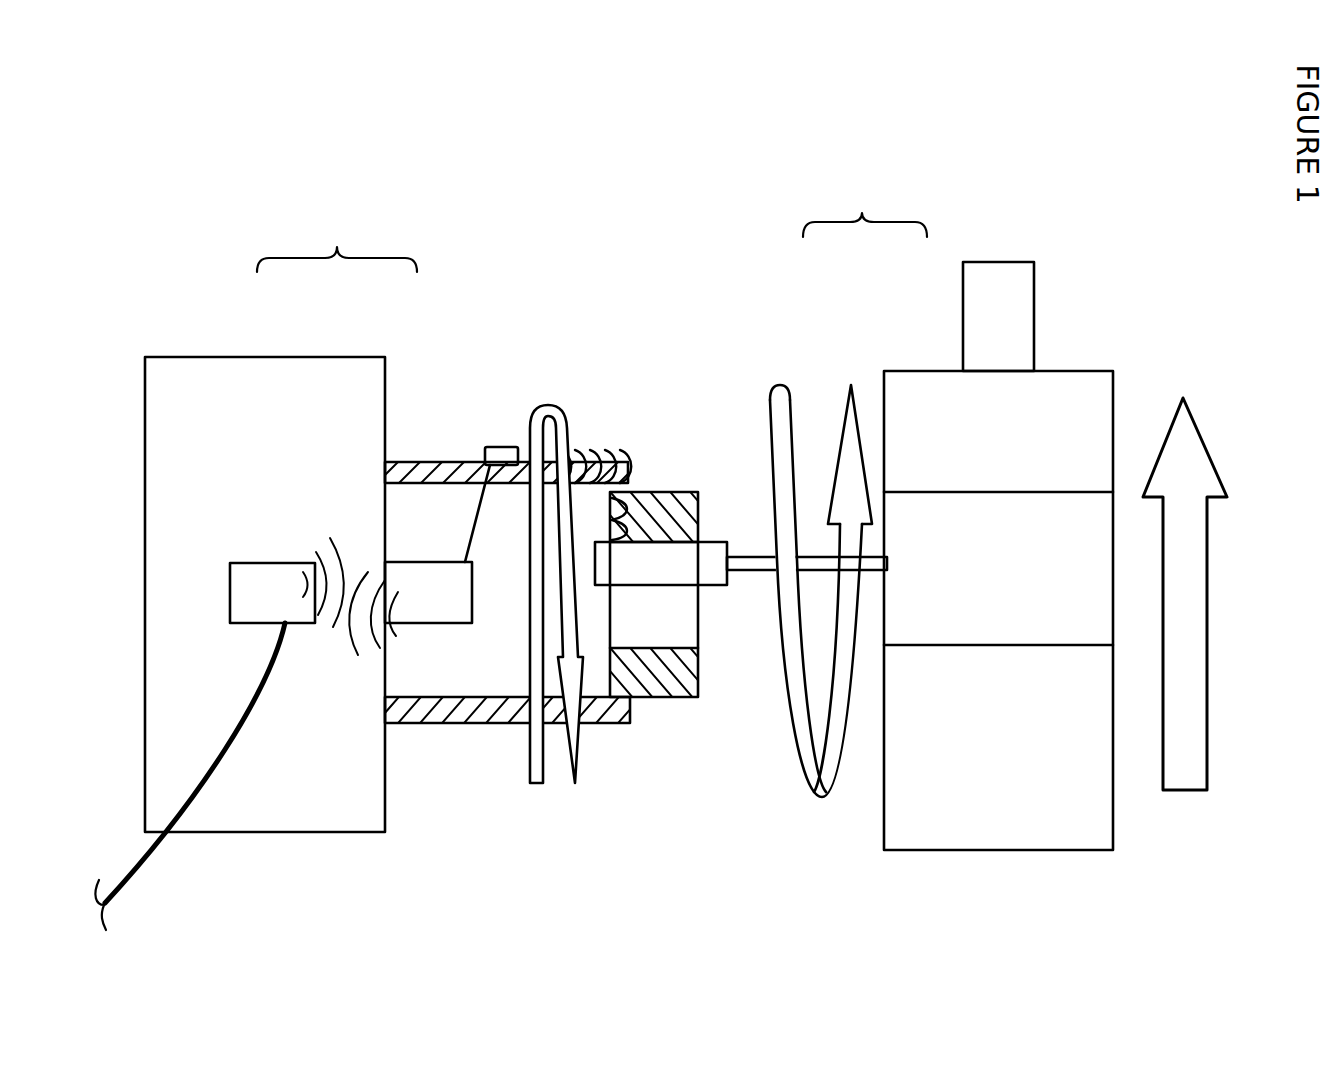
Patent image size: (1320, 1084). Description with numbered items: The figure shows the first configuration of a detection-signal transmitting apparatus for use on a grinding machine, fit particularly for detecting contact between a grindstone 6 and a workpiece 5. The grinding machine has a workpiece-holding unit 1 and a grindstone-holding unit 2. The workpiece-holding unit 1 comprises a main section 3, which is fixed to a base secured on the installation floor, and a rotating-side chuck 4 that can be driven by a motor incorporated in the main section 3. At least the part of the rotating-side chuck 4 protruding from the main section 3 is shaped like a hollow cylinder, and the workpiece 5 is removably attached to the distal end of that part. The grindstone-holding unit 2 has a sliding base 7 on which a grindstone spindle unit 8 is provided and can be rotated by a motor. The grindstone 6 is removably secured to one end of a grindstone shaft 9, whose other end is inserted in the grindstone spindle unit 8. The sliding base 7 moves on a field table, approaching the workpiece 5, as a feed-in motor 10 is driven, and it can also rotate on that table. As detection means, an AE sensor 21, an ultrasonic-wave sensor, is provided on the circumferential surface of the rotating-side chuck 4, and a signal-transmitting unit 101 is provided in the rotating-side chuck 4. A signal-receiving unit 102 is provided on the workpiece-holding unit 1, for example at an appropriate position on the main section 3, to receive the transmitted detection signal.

The workpiece-holding unit 1 is at (319, 237).
The grindstone-holding unit 2 is at (874, 201).
The main section 3 is at (271, 383).
The rotating-side chuck 4 is at (422, 470).
The workpiece 5 is at (672, 676).
The grindstone 6 is at (712, 562).
The sliding base 7 is at (913, 393).
The grindstone spindle unit 8 is at (917, 515).
The grindstone shaft 9 is at (812, 565).
The feed-in motor 10 is at (978, 293).
The AE sensor 21 is at (497, 447).
The signal-transmitting unit 101 is at (418, 565).
The signal-receiving unit 102 is at (232, 582).